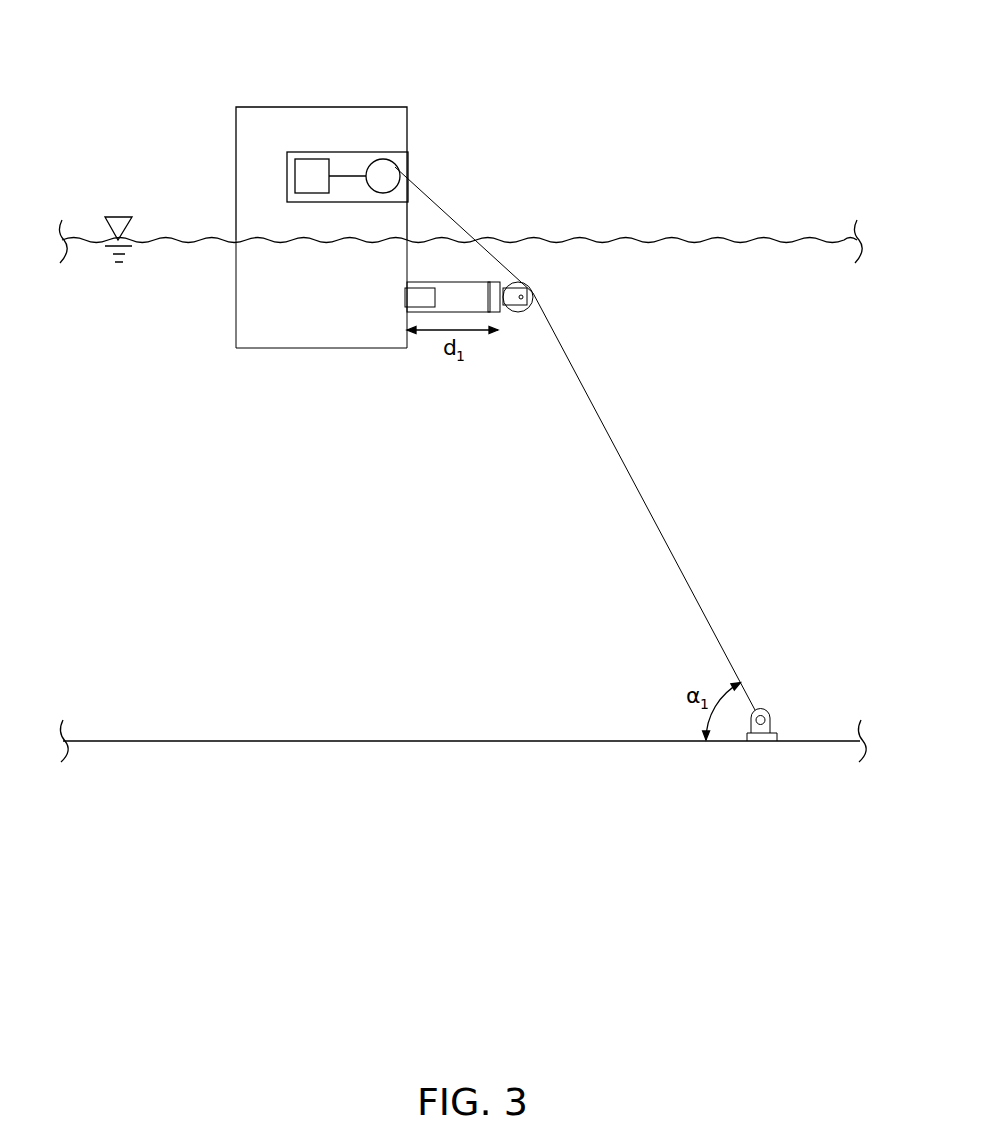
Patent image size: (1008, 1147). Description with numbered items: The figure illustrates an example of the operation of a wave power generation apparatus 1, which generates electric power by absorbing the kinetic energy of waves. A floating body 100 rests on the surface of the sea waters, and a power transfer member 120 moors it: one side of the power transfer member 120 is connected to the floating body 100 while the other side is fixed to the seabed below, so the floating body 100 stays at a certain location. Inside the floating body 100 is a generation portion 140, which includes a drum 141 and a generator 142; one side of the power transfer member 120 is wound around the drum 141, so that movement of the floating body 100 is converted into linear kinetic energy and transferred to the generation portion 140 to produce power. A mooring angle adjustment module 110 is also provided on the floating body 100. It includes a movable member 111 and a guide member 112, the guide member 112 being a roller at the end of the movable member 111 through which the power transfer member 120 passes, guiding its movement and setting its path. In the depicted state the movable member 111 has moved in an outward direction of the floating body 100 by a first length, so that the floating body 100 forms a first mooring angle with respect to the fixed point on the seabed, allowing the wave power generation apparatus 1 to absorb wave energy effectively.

The wave power generation apparatus 1 is at (470, 14).
The floating body 100 is at (236, 132).
The mooring angle adjustment module 110 is at (612, 253).
The movable member 111 is at (473, 288).
The guide member 112 is at (530, 298).
The power transfer member 120 is at (437, 202).
The generation portion 140 is at (423, 63).
The drum 141 is at (382, 160).
The generator 142 is at (312, 157).